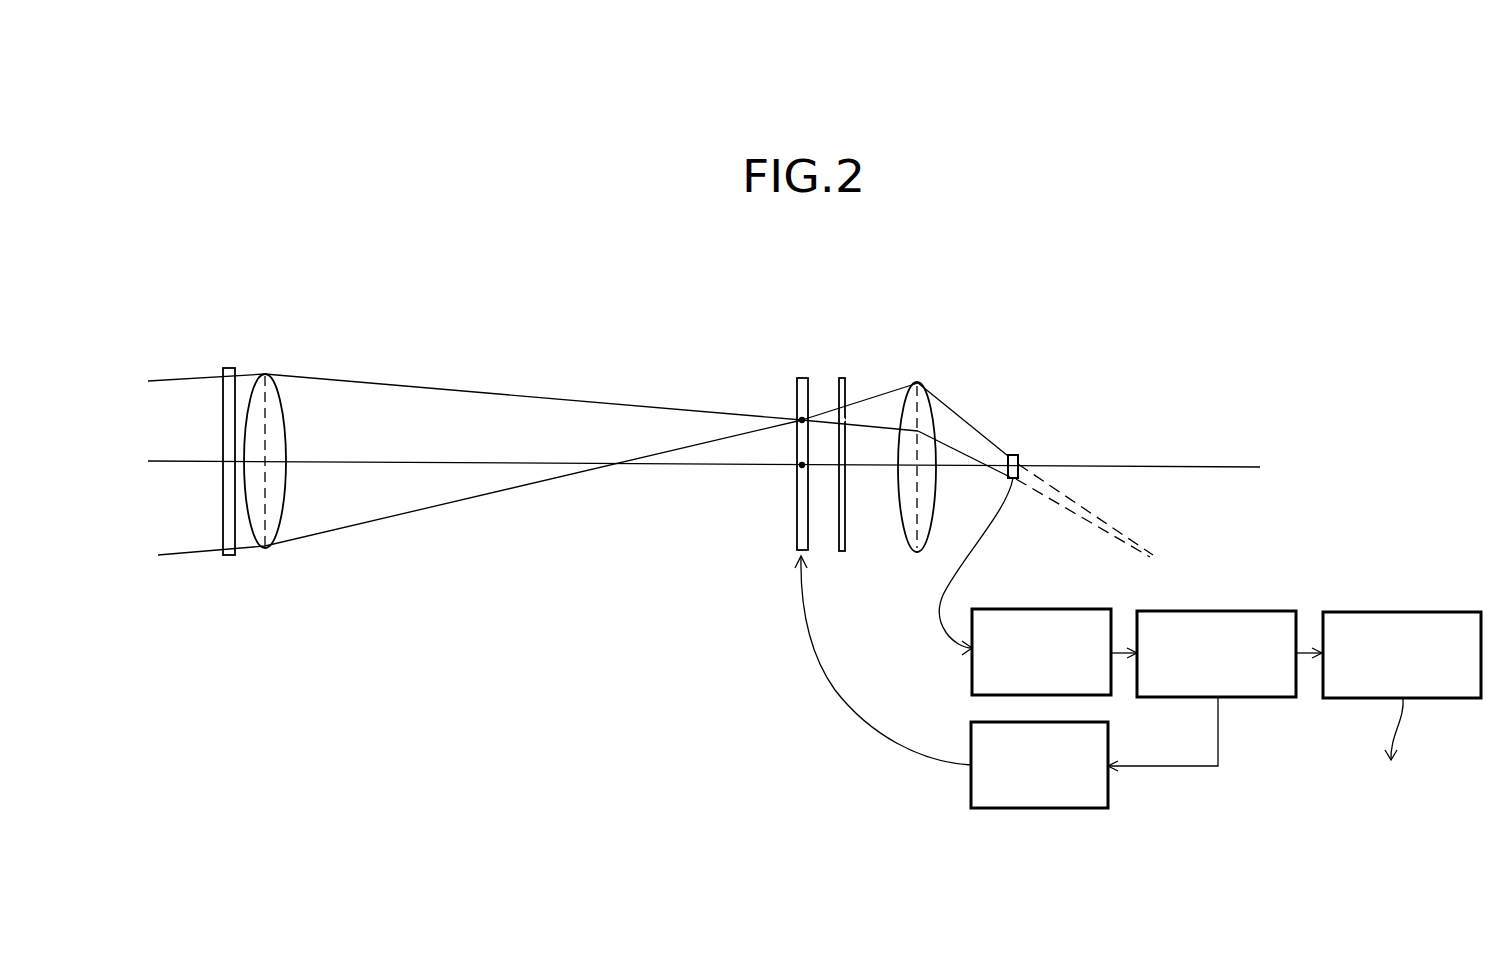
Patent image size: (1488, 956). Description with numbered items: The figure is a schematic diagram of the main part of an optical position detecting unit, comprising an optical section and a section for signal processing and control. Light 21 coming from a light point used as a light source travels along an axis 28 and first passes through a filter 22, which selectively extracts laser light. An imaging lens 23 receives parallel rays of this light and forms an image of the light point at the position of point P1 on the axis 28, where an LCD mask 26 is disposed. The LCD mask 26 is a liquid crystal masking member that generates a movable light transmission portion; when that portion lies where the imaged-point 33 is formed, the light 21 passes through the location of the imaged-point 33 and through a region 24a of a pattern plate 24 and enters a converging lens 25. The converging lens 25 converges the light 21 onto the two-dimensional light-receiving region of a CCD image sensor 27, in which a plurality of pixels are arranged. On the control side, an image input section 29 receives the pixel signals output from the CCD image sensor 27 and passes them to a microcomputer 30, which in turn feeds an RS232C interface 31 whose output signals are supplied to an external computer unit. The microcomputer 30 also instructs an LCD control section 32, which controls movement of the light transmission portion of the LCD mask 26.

The path of light 21 is at (519, 404).
The filter 22 is at (230, 368).
The imaging lens 23 is at (277, 381).
The pattern plate 24 is at (845, 367).
The region of the pattern plate 24a is at (848, 418).
The converging lens 25 is at (921, 383).
The LCD mask 26 is at (800, 378).
The CCD image sensor 27 is at (1020, 455).
The axis 28 is at (668, 467).
The image input section 29 is at (1073, 609).
The microcomputer 30 is at (1228, 611).
The RS232C interface 31 is at (1390, 612).
The LCD control section 32 is at (1043, 808).
The imaged-point 33 is at (799, 416).
The point P1 is at (802, 467).